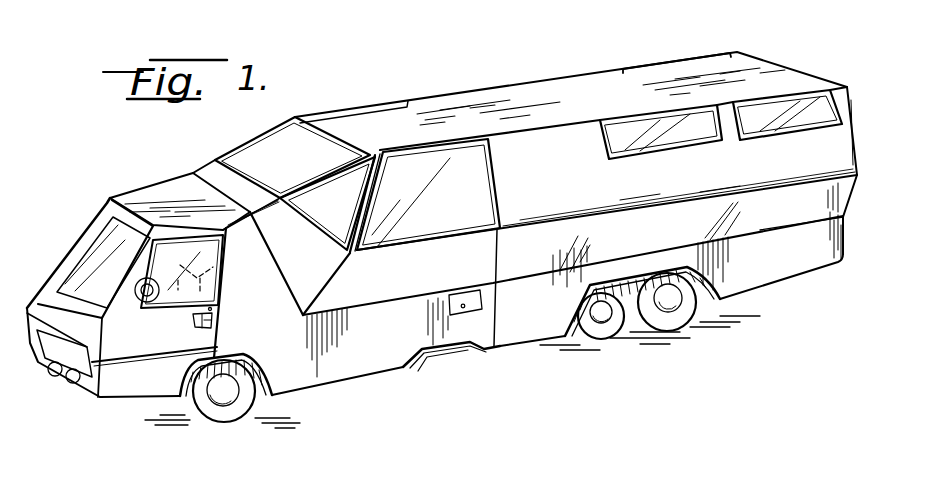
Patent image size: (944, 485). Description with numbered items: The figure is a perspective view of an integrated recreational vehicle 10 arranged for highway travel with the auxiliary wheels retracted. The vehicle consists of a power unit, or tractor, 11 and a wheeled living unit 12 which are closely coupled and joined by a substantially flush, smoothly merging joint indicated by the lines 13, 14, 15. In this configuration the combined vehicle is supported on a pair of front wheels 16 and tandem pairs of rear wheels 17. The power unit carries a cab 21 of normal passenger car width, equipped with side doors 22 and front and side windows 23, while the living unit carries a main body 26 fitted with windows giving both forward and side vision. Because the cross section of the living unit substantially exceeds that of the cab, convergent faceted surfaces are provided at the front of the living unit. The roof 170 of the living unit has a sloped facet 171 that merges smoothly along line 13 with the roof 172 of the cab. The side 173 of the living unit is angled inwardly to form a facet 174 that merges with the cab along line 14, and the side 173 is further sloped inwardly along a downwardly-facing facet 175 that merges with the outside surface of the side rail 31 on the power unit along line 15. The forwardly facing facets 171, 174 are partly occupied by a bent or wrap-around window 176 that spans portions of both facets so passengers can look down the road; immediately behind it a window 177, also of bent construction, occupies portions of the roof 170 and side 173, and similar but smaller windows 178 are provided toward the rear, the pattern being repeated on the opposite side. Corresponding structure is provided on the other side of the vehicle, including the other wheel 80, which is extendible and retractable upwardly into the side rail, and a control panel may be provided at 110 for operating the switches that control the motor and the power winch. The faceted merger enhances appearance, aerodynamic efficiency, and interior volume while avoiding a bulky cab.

The integrated recreational vehicle 10 is at (566, 389).
The power unit 11 is at (350, 394).
The wheeled living unit 12 is at (779, 299).
The joint line 13 is at (205, 178).
The joint line 14 is at (288, 293).
The joint line 15 is at (398, 297).
The front wheels 16 is at (238, 412).
The rear wheels 17 is at (617, 328).
The cab 21 is at (86, 212).
The side doors 22 is at (140, 387).
The front and side windows 23 is at (111, 266).
The main body 26 is at (553, 90).
The side rail 31 is at (372, 356).
The wheel 80 is at (458, 355).
The control panel 110 is at (472, 300).
The roof 170 is at (483, 108).
The sloped facet 171 is at (310, 168).
The roof of the cab 172 is at (155, 190).
The side 173 is at (600, 199).
The facet 174 is at (318, 259).
The downwardly-facing facet 175 is at (455, 283).
The window 176 is at (261, 137).
The window 177 is at (378, 105).
The windows 178 is at (654, 66).